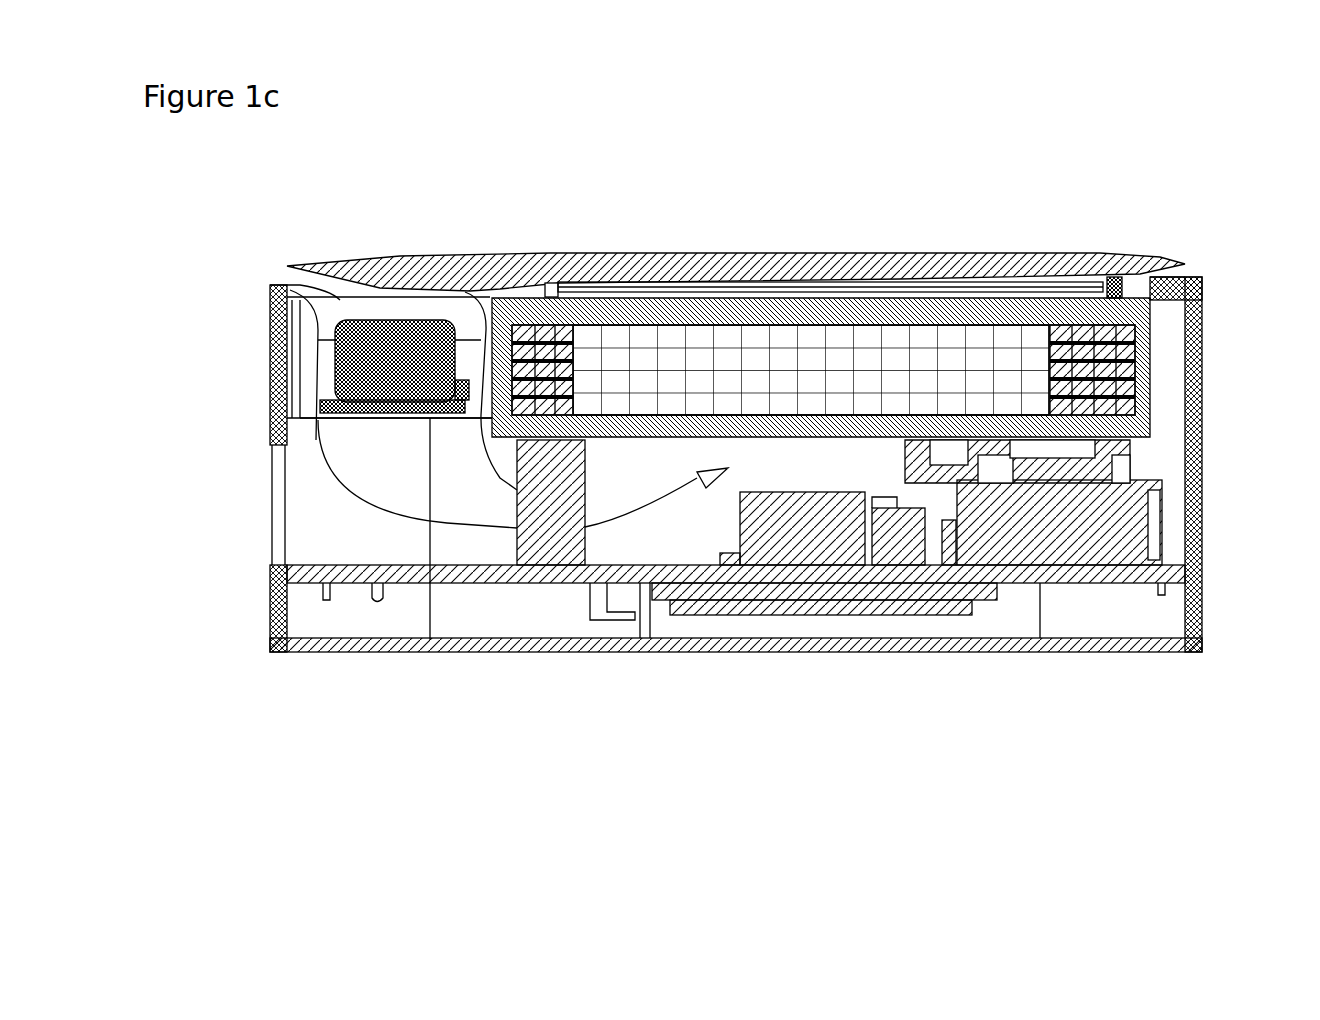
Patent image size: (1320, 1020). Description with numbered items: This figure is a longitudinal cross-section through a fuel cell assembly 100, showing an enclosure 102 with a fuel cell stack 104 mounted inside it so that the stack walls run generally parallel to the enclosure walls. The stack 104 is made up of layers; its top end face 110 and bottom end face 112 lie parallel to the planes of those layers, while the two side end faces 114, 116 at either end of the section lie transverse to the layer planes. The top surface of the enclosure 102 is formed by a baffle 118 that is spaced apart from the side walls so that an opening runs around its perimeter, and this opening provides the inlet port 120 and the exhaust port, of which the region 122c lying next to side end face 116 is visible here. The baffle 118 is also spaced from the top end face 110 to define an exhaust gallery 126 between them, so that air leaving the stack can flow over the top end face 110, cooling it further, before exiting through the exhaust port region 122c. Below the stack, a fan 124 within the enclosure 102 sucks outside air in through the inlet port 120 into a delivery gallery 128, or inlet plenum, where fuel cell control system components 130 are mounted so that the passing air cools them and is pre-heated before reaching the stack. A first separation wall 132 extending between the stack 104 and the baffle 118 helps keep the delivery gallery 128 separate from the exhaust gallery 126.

The fuel cell assembly 100 is at (305, 219).
The enclosure 102 is at (268, 633).
The fuel cell stack 104 is at (1150, 383).
The top end face 110 is at (857, 300).
The bottom end face 112 is at (623, 442).
The side end face 114 is at (490, 407).
The side end face 116 is at (1150, 325).
The baffle 118 is at (500, 256).
The inlet port 120 is at (256, 273).
The region of the exhaust port 122c is at (1192, 263).
The fan 124 is at (373, 358).
The exhaust gallery 126 is at (755, 290).
The delivery gallery 128 is at (453, 473).
The fuel cell control system components 130 is at (1100, 548).
The first separation wall 132 is at (533, 283).